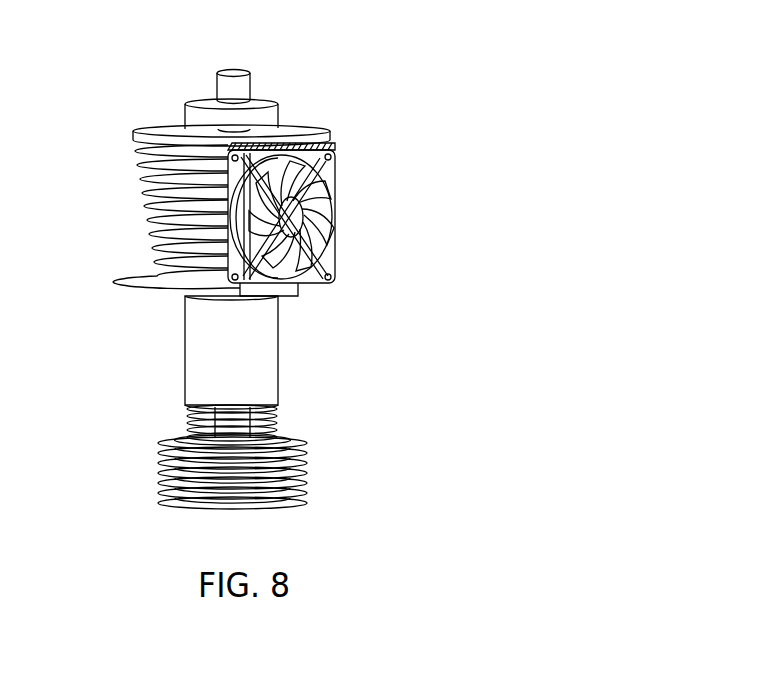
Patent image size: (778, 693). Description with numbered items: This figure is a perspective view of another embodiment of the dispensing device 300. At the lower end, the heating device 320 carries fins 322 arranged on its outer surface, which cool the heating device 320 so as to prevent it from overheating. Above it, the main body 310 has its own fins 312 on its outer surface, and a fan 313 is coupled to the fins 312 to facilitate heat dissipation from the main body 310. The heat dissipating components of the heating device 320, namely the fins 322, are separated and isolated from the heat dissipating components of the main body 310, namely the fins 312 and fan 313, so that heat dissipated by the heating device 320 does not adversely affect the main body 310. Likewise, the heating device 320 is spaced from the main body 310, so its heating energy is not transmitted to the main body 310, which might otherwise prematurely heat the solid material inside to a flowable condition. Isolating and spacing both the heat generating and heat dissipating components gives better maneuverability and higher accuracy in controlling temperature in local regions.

The dispensing device 300 is at (402, 92).
The main body 310 is at (267, 352).
The fins 312 is at (146, 192).
The fan 313 is at (328, 213).
The heating device 320 is at (146, 433).
The fins 322 is at (305, 448).